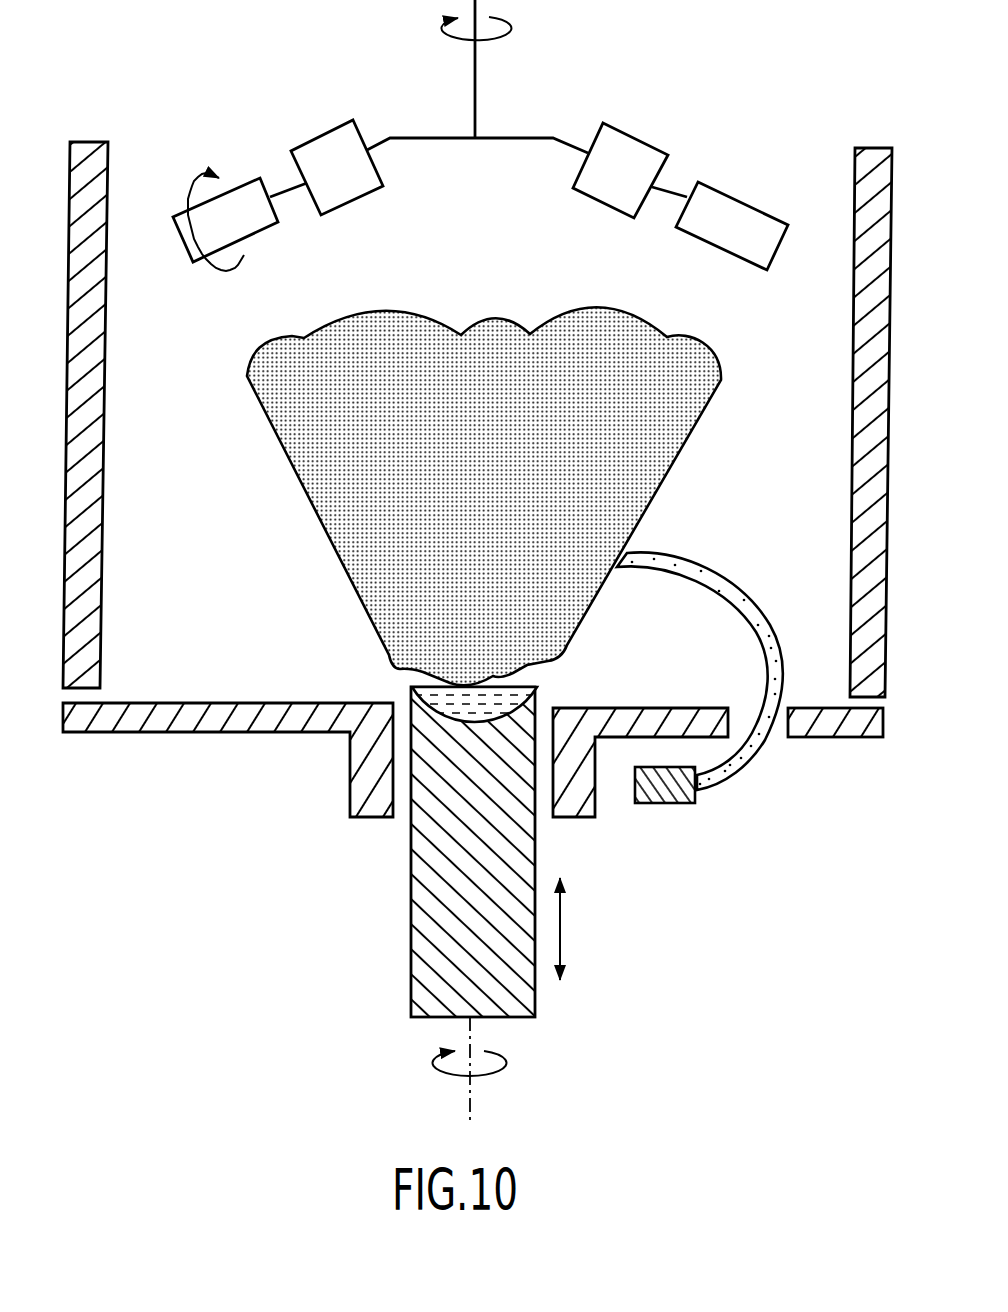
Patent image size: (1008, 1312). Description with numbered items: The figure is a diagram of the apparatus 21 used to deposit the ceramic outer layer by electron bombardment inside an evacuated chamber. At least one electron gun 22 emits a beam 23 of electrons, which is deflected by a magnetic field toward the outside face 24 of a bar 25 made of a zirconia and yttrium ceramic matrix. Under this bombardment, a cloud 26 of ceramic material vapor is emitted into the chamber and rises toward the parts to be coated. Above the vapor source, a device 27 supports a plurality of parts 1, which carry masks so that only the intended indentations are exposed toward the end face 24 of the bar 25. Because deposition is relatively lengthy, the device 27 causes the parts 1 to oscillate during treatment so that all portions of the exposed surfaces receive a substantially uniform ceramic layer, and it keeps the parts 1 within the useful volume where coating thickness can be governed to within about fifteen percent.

The part 1 is at (737, 208).
The device 27 is at (505, 137).
The cloud 26 is at (648, 480).
The outside face 24 is at (527, 683).
The bar 25 is at (423, 893).
The beam 23 is at (748, 755).
The electron gun 22 is at (665, 805).
The apparatus 21 is at (183, 838).